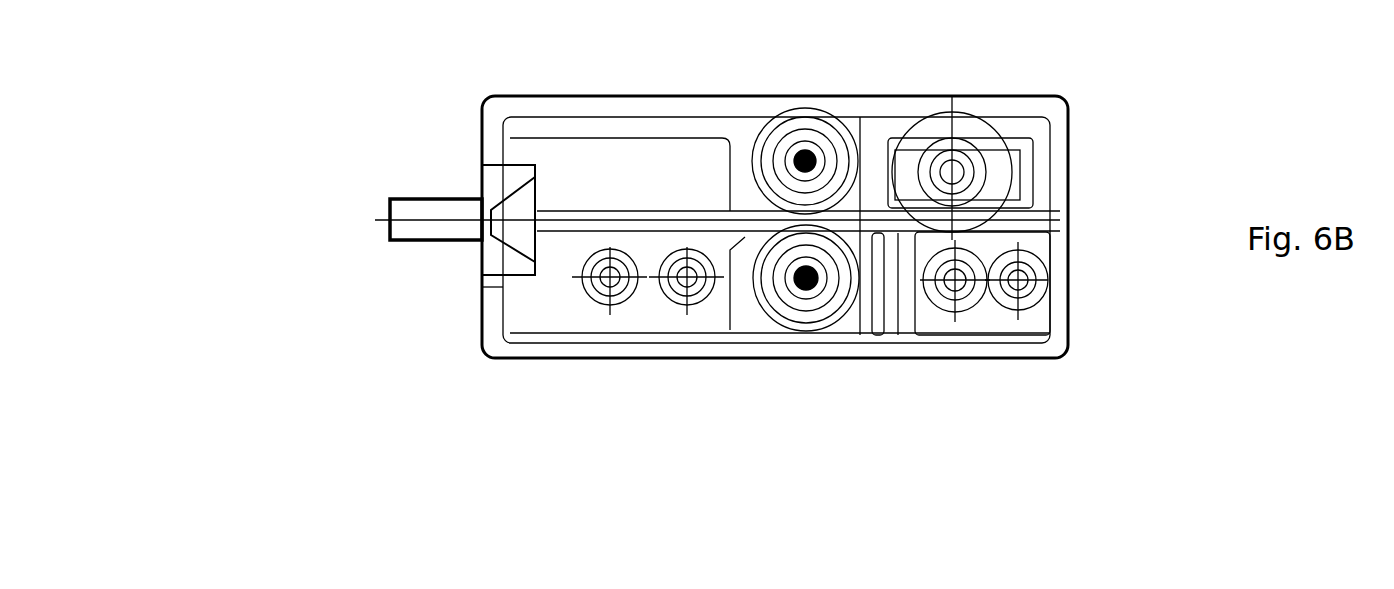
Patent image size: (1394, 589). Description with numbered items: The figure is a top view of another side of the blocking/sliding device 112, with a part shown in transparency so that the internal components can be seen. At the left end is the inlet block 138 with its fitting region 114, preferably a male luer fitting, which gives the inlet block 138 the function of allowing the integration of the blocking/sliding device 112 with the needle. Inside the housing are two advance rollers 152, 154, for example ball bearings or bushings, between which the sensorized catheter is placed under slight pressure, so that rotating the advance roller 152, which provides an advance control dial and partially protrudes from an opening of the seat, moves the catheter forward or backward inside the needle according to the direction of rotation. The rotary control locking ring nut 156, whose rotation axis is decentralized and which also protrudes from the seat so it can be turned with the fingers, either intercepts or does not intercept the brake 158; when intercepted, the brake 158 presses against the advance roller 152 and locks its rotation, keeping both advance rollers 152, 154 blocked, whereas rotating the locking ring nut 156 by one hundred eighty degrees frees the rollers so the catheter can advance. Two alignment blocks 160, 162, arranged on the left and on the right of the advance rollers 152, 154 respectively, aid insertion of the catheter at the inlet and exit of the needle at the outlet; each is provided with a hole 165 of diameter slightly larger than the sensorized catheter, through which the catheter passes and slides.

The blocking/sliding device 112 is at (304, 102).
The fitting region 114 is at (412, 222).
The inlet block 138 is at (517, 218).
The advance roller 152 is at (808, 108).
The advance roller 154 is at (785, 302).
The rotary control locking ring nut 156 is at (958, 108).
The brake 158 is at (865, 193).
The alignment block 160 is at (907, 313).
The alignment block 162 is at (655, 172).
The hole 165 is at (585, 212).